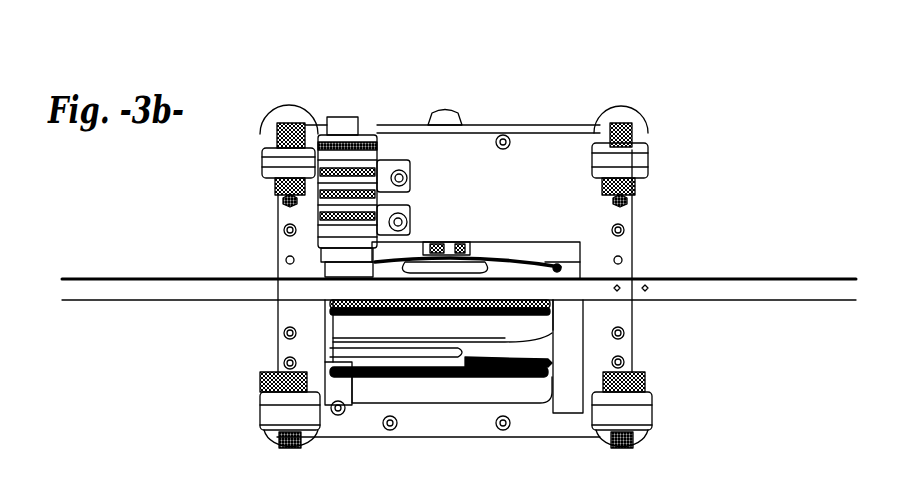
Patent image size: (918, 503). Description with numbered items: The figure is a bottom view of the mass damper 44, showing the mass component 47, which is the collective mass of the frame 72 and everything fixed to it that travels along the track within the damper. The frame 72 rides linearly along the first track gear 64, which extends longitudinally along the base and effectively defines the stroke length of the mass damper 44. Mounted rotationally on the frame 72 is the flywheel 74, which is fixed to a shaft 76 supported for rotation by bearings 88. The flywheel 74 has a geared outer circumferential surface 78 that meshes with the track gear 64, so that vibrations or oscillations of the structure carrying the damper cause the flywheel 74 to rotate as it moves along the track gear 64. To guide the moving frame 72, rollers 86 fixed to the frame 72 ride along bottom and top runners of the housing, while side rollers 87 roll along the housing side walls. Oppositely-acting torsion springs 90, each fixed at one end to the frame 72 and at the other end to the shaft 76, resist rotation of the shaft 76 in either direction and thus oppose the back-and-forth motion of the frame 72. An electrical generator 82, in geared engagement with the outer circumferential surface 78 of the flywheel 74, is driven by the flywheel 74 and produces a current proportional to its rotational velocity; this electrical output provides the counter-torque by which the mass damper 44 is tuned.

The mass damper 44 is at (768, 60).
The mass component 47 is at (195, 203).
The first track gear 64 is at (213, 278).
The frame 72 is at (488, 212).
The flywheel 74 is at (513, 258).
The shaft 76 is at (450, 110).
The geared outer circumferential surface 78 is at (557, 268).
The electrical generator 82 is at (320, 218).
The rollers 86 is at (260, 168).
The side rollers 87 is at (600, 122).
The bearings 88 is at (262, 410).
The torsion springs 90 is at (538, 323).